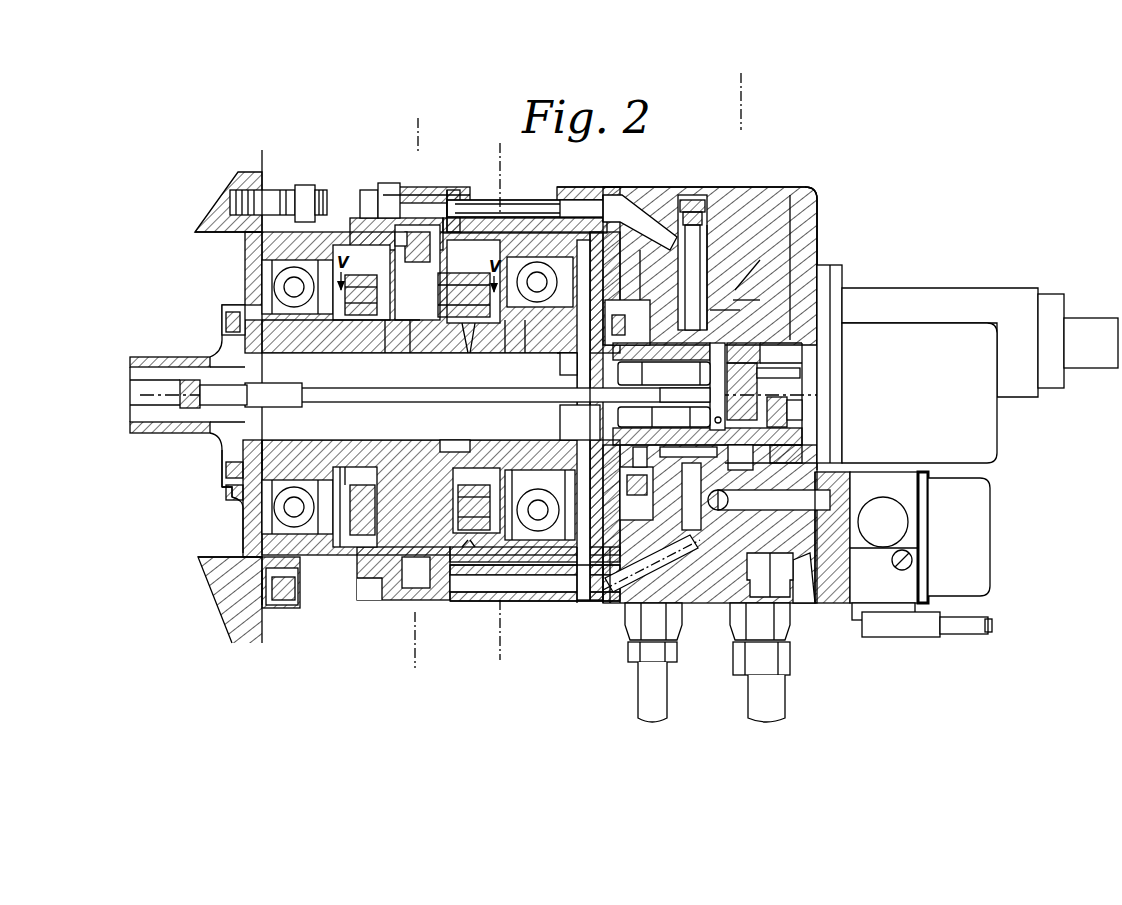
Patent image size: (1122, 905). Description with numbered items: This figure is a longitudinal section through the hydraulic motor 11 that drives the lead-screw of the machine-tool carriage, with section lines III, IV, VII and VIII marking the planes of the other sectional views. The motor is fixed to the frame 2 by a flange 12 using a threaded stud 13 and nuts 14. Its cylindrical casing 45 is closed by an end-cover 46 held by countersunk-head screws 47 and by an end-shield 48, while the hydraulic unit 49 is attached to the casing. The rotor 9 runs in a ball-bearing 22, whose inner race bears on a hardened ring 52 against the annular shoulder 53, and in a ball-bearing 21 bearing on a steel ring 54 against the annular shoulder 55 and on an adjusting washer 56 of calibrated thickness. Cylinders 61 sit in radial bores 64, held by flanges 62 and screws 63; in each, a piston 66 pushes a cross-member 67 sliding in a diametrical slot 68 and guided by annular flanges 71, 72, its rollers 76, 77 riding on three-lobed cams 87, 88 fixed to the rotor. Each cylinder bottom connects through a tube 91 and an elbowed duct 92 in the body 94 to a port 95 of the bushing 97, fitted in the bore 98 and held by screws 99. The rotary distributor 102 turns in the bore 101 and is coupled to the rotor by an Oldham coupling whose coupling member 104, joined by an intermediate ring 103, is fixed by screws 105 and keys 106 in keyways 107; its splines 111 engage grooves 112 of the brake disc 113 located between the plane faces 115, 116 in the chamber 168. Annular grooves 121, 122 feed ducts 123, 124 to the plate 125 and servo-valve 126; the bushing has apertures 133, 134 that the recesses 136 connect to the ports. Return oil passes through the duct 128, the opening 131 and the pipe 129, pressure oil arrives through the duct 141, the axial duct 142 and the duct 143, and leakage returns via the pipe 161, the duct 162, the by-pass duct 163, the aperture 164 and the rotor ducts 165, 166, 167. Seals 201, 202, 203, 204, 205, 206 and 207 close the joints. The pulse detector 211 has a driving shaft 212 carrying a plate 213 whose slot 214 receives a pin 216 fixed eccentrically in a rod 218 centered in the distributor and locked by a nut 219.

The frame 2 is at (246, 180).
The rotor 9 is at (221, 473).
The hydraulic motor 11 is at (548, 183).
The flange 12 is at (270, 190).
The threaded stud 13 is at (322, 190).
The nut 14 is at (305, 185).
The ball-bearing 21 is at (288, 505).
The ball-bearing 22 is at (530, 598).
The cylindrical casing 45 is at (358, 272).
The end-cover 46 is at (250, 272).
The countersunk-head screw 47 is at (283, 612).
The end-shield 48 is at (582, 208).
The hydraulic unit 49 is at (779, 175).
The ring 52 is at (468, 490).
The annular shoulder 53 is at (488, 490).
The steel ring 54 is at (337, 467).
The annular shoulder 55 is at (342, 472).
The adjusting washer 56 is at (255, 548).
The cylinder 61 is at (420, 190).
The flange 62 is at (370, 192).
The screw 63 is at (395, 185).
The radial bore 64 is at (361, 282).
The piston 66 is at (445, 337).
The cross-member 67 is at (386, 338).
The diametrical slot 68 is at (444, 257).
The annular flange 71 is at (364, 343).
The annular flange 72 is at (453, 510).
The roller 76 is at (355, 240).
The roller 77 is at (470, 337).
The cam 87 is at (360, 497).
The cam 88 is at (465, 445).
The tube 91 is at (525, 215).
The elbowed duct 92 is at (710, 310).
The body 94 is at (790, 195).
The port 95 is at (733, 300).
The bushing 97 is at (815, 250).
The bore 98 is at (735, 300).
The screw 99 is at (690, 230).
The bore 101 is at (603, 657).
The rotary distributor 102 is at (630, 450).
The intermediate ring 103 is at (610, 350).
The coupling member 104 is at (645, 260).
The screw 105 is at (580, 447).
The key 106 is at (585, 352).
The keyway 107 is at (558, 356).
The splines 111 is at (543, 497).
The grooves 112 is at (643, 450).
The brake disc 113 is at (587, 598).
The plane face 115 is at (622, 260).
The plane face 116 is at (527, 192).
The annular groove 121 is at (694, 300).
The annular groove 122 is at (810, 200).
The duct 123 is at (680, 447).
The duct 124 is at (757, 523).
The plate 125 is at (845, 600).
The servo-valve 126 is at (892, 585).
The duct 128 is at (833, 595).
The pipe 129 is at (795, 700).
The opening 131 is at (768, 570).
The aperture 133 is at (685, 459).
The aperture 134 is at (664, 373).
The peripheral recess 136 is at (703, 368).
The duct 141 is at (847, 512).
The axial duct 142 is at (810, 467).
The duct 143 is at (688, 560).
The pipe 161 is at (640, 700).
The duct 162 is at (605, 605).
The duct 163 is at (695, 208).
The aperture 164 is at (505, 337).
The duct 165 is at (525, 347).
The duct 166 is at (411, 348).
The duct 167 is at (266, 462).
The chamber 168 is at (553, 598).
The seal 201 is at (227, 484).
The seal 202 is at (800, 450).
The seal 203 is at (470, 185).
The seal 204 is at (604, 187).
The seal 205 is at (257, 238).
The seal 206 is at (558, 190).
The seal 207 is at (598, 610).
The pulse detector 211 is at (997, 443).
The driving shaft 212 is at (800, 393).
The plate 213 is at (790, 418).
The slot 214 is at (838, 300).
The pin 216 is at (842, 345).
The rod 218 is at (458, 403).
The nut 219 is at (192, 400).
The section line III— III is at (392, 133).
The section line IV— IV is at (478, 157).
The section line VII— VII is at (755, 101).
The section line VIII— VIII is at (962, 228).